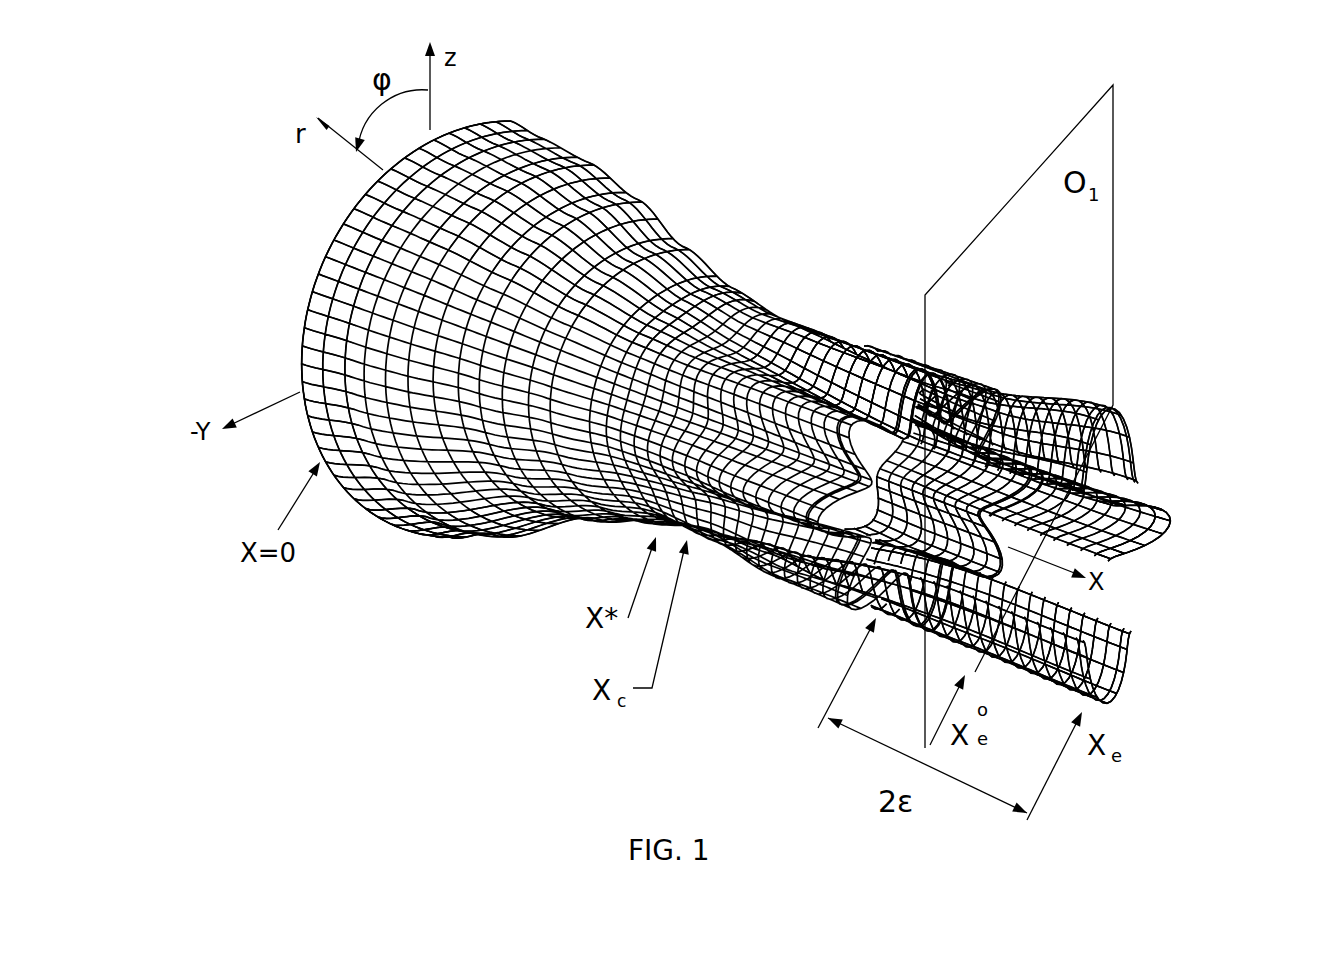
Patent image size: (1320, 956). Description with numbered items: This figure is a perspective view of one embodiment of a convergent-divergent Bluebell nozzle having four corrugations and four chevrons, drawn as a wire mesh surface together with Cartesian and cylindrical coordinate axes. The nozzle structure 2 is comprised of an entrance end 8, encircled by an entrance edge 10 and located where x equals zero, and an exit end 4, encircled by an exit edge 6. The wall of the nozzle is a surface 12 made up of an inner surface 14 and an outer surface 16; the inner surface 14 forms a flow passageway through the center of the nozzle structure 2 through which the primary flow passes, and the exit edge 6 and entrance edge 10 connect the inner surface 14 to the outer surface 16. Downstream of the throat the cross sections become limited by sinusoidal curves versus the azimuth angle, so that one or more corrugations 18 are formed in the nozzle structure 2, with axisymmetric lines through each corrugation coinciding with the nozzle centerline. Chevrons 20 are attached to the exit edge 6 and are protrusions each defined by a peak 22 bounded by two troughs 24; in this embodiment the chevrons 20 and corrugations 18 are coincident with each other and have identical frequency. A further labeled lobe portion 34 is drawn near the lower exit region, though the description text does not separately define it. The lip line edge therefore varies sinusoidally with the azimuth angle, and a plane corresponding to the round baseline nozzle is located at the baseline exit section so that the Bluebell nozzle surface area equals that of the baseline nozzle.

The nozzle structure 2 is at (332, 580).
The exit end 4 is at (1162, 586).
The exit edge 6 is at (1192, 512).
The entrance end 8 is at (327, 237).
The entrance edge 10 is at (305, 440).
The surface 12 is at (481, 533).
The inner surface 14 is at (1128, 478).
The outer surface 16 is at (612, 212).
The corrugations 18 is at (850, 397).
The chevrons 20 is at (1070, 400).
The peak 22 is at (1012, 600).
The troughs 24 is at (880, 405).
The lobe 34 is at (830, 596).